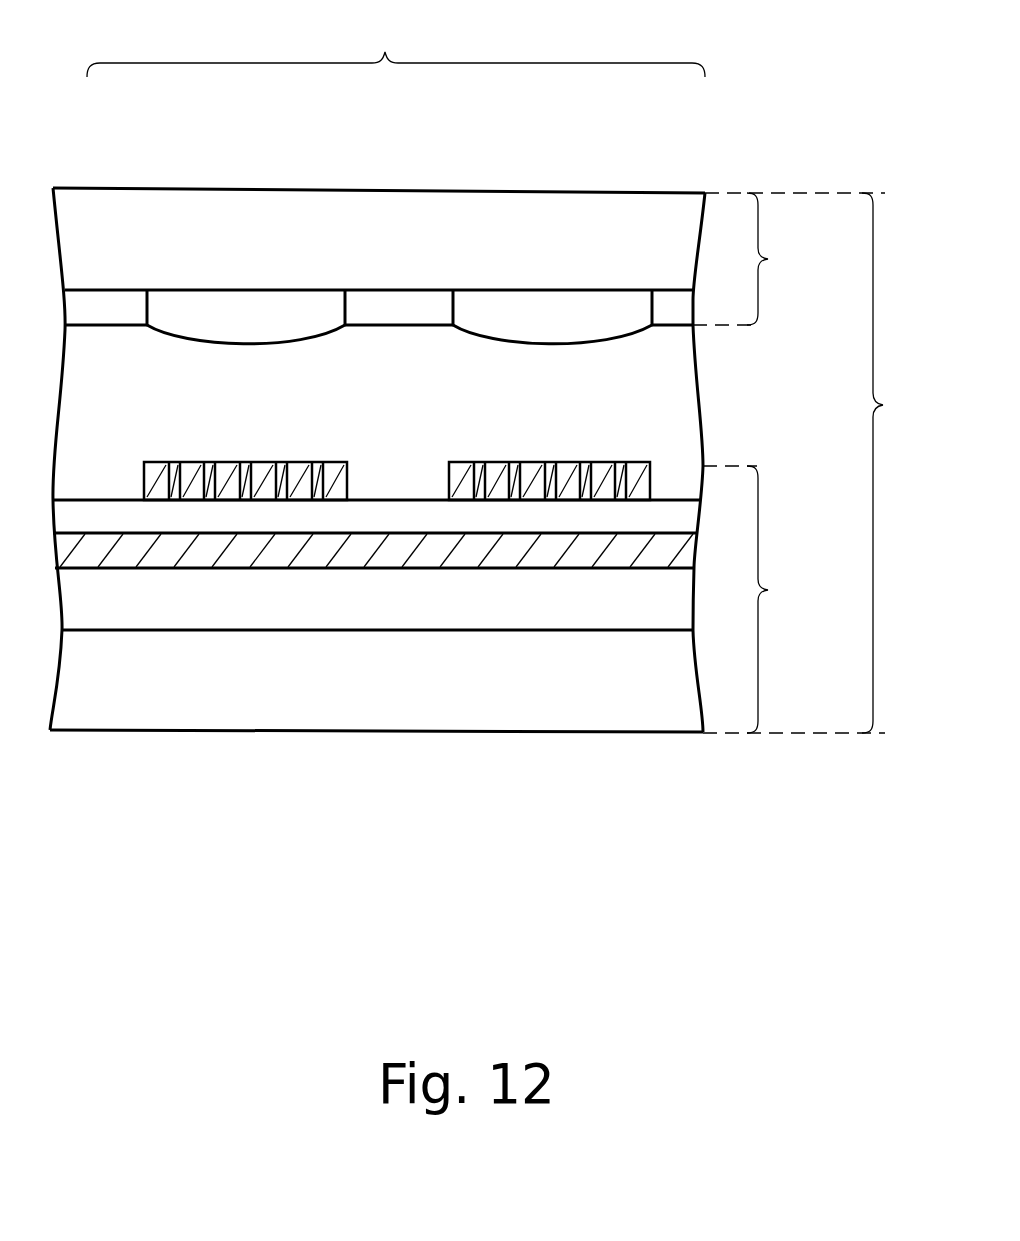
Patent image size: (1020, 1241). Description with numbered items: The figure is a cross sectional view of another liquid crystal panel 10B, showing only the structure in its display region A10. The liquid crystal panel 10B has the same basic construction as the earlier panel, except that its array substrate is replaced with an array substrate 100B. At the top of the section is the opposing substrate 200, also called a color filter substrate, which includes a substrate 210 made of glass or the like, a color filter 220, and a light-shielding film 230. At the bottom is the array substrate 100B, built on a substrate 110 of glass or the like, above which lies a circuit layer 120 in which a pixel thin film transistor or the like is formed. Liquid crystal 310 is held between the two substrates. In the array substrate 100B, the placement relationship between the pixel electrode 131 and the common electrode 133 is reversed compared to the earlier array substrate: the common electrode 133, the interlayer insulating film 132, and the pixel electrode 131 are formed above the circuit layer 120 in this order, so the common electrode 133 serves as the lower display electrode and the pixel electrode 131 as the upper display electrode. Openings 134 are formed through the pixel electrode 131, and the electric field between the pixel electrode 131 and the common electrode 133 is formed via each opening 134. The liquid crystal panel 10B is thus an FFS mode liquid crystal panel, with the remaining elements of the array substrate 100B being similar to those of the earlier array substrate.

The display region A10 is at (396, 46).
The liquid crystal panel 10B is at (495, 460).
The substrate 210 is at (122, 198).
The color filter 220 is at (245, 317).
The light-shielding film 230 is at (395, 317).
The opposing substrate 200 is at (789, 259).
The liquid crystal 310 is at (655, 405).
The pixel electrode 131 is at (232, 462).
The opening 134 is at (178, 460).
The interlayer insulating film 132 is at (393, 518).
The common electrode 133 is at (450, 548).
The circuit layer 120 is at (260, 605).
The substrate 110 is at (122, 700).
The array substrate 100B is at (794, 599).